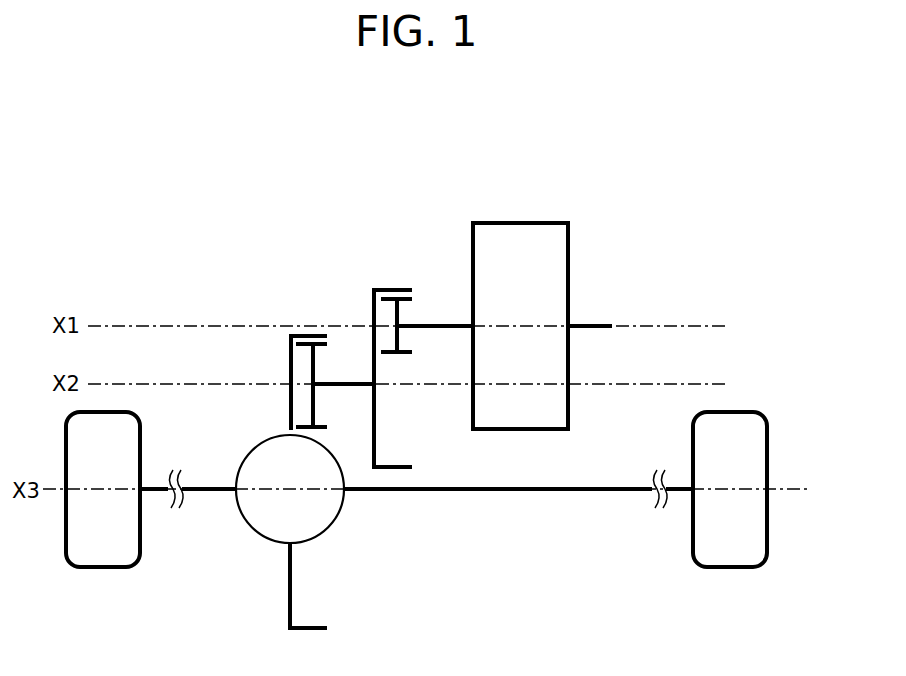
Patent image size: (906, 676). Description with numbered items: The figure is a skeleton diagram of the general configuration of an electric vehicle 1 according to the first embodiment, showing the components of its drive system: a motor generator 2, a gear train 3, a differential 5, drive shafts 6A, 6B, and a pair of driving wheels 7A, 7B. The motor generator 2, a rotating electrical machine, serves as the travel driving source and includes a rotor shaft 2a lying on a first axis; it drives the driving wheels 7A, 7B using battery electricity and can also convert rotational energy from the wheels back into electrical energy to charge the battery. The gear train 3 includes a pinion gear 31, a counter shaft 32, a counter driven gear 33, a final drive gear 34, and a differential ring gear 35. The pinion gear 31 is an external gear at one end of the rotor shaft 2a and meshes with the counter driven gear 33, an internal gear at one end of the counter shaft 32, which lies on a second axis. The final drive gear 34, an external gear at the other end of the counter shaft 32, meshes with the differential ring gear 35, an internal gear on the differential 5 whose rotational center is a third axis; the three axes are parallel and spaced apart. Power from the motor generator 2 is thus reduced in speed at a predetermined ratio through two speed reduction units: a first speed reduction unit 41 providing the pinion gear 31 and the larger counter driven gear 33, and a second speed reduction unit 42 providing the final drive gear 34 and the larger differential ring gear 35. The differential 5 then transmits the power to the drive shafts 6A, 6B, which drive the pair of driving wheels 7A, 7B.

The electric vehicle 1 is at (508, 158).
The motor generator 2 is at (568, 259).
The rotor shaft 2a is at (428, 328).
The gear train 3 is at (319, 212).
The first speed reduction unit 41 is at (424, 253).
The second speed reduction unit 42 is at (297, 302).
The pinion gear 31 is at (412, 299).
The counter shaft 32 is at (334, 384).
The counter driven gear 33 is at (391, 289).
The final drive gear 34 is at (313, 397).
The differential ring gear 35 is at (290, 358).
The differential 5 is at (250, 447).
The drive shaft 6A is at (520, 492).
The drive shaft 6B is at (197, 493).
The driving wheel 7A is at (728, 568).
The driving wheel 7B is at (88, 568).